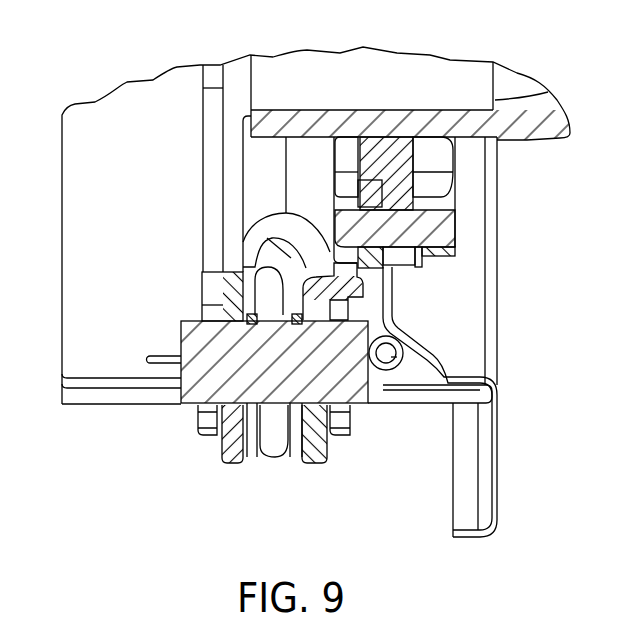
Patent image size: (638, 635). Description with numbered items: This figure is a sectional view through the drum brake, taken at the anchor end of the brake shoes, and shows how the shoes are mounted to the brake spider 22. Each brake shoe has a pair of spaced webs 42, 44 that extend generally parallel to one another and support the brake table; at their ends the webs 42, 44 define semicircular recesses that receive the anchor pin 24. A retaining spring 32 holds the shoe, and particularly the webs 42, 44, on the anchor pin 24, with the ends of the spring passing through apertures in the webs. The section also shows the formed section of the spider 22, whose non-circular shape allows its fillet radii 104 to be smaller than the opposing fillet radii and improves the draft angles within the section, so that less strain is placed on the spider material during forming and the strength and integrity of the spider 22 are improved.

The fillet radii 104 is at (353, 266).
The web 42 is at (349, 301).
The retaining spring 32 is at (378, 378).
The web 44 is at (202, 292).
The anchor pin 24 is at (193, 383).
The brake spider 22 is at (317, 443).